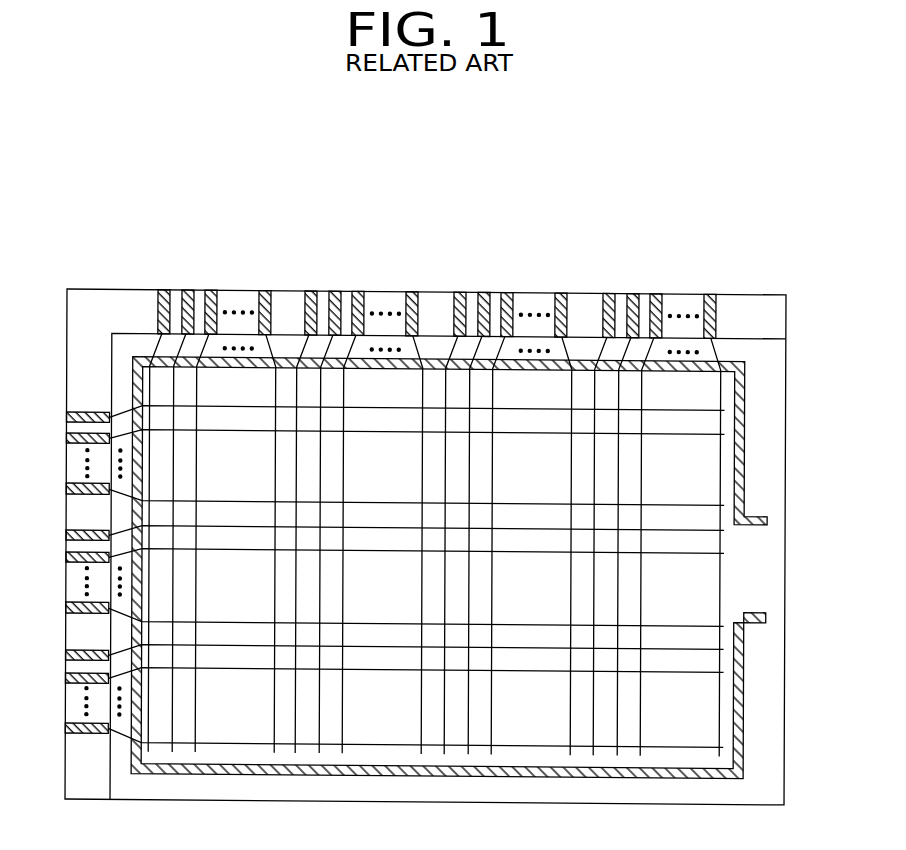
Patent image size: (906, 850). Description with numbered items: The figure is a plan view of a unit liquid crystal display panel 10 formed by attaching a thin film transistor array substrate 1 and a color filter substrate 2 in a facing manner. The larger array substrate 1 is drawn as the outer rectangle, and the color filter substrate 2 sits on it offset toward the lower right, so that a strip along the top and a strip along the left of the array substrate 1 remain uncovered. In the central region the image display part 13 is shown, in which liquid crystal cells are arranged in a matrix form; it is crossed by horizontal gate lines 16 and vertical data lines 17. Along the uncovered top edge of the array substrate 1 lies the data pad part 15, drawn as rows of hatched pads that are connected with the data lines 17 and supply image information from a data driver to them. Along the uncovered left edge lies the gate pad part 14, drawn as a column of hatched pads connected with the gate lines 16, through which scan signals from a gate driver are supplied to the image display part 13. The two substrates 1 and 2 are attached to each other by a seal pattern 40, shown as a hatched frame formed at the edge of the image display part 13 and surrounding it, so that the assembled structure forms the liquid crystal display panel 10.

The liquid crystal display panel 10 is at (96, 272).
The array substrate 1 is at (775, 312).
The color filter substrate 2 is at (777, 372).
The image display part 13 is at (398, 472).
The gate pad part 14 is at (58, 412).
The data pad part 15 is at (715, 283).
The gate lines 16 is at (700, 728).
The data lines 17 is at (717, 685).
The seal pattern 40 is at (742, 439).